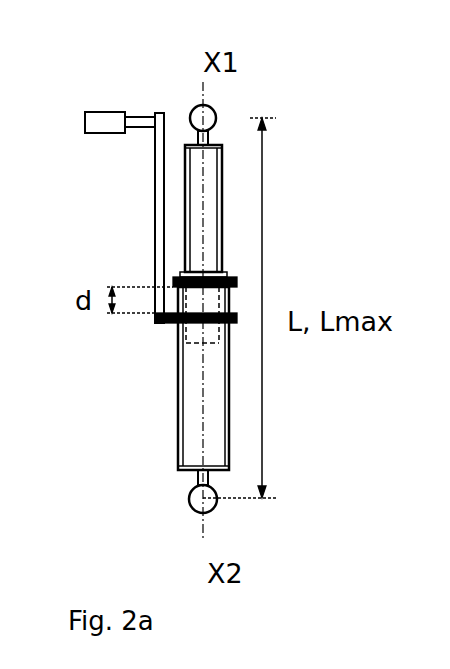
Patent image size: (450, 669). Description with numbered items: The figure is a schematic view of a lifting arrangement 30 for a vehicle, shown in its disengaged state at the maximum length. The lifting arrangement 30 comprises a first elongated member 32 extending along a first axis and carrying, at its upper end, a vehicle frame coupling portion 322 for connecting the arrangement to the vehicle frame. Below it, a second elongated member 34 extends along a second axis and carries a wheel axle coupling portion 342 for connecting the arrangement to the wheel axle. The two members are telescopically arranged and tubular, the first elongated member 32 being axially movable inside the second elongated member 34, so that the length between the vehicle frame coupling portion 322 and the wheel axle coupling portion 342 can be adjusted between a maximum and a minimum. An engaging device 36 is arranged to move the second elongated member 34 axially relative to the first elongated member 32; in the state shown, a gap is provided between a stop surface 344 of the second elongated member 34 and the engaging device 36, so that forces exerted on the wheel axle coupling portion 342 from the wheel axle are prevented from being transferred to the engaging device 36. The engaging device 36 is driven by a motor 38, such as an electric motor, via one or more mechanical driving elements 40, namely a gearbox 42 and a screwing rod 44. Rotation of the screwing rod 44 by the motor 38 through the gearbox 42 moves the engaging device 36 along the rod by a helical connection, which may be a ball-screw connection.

The lifting arrangement 30 is at (309, 154).
The first elongated member 32 is at (222, 220).
The vehicle frame coupling portion 322 is at (216, 117).
The second elongated member 34 is at (229, 412).
The wheel axle coupling portion 342 is at (212, 512).
The stop surface 344 is at (237, 283).
The engaging device 36 is at (172, 324).
The motor 38 is at (112, 135).
The mechanical driving elements 40 is at (145, 221).
The gearbox 42 is at (142, 115).
The screwing rod 44 is at (167, 124).